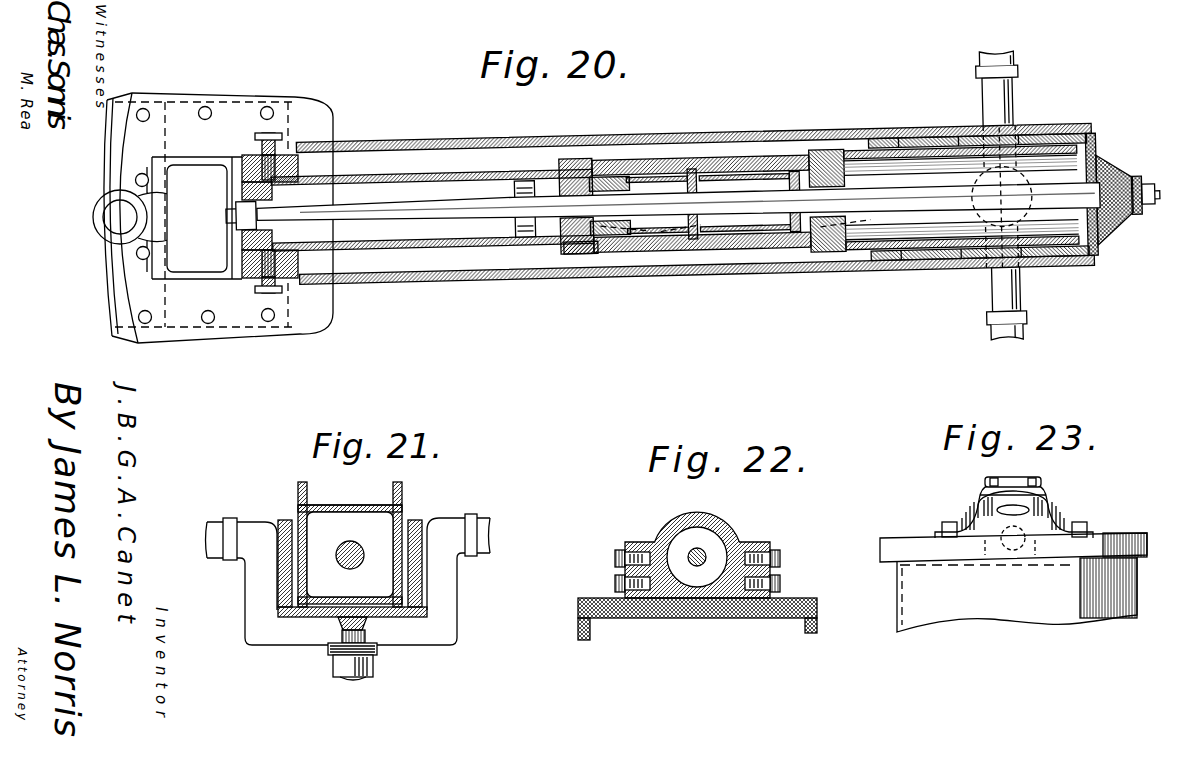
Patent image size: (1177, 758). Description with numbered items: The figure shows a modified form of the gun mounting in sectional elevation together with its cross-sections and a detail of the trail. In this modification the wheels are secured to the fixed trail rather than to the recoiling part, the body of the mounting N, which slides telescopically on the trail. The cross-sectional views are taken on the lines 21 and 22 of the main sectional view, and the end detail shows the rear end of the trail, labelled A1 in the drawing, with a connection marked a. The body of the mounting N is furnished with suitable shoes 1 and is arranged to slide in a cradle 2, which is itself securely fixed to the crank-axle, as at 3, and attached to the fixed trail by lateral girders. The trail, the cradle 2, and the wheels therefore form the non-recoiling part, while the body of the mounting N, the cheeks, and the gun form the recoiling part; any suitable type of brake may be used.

In FIG. 20, the recoil cylinder / tube A1 is at (421, 292).
In FIG. 21, the recoil cylinder / tube A1 is at (444, 500).
In FIG. 22, the recoil cylinder / tube A1 is at (783, 537).
In FIG. 23, the recoil cylinder / tube A1 is at (1013, 554).
In FIG. 20, the body of the mounting N is at (812, 263).
In FIG. 21, the body of the mounting N is at (338, 503).
In FIG. 20, the frame / pipe connection a is at (1020, 309).
In FIG. 21, the frame / pipe connection a is at (448, 592).
In FIG. 20, the section line 21 is at (1003, 378).
In FIG. 20, the section line 22 is at (268, 366).
In FIG. 21, the shoes 1 is at (407, 614).
In FIG. 21, the cradle 2 is at (320, 620).
In FIG. 21, the fixing of cradle to crank-axle 3 is at (347, 648).